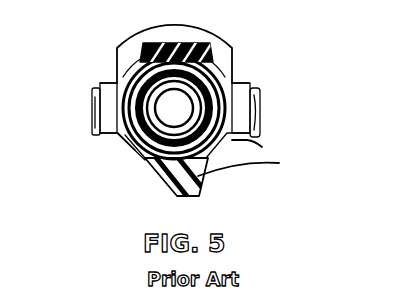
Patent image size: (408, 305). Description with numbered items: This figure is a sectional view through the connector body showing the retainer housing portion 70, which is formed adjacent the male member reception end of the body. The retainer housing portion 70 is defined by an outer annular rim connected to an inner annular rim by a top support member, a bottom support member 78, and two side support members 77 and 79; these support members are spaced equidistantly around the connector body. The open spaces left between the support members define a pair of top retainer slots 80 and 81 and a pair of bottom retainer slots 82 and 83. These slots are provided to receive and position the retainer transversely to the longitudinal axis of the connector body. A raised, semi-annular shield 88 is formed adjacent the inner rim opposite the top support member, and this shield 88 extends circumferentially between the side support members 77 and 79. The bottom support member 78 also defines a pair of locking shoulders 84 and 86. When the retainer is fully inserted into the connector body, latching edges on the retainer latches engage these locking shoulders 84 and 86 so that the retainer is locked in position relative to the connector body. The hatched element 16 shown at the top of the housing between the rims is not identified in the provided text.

The key block 16 is at (188, 42).
The retainer housing portion 70 is at (145, 43).
The side support member 77 is at (88, 112).
The bottom support member 78 is at (203, 192).
The side support member 79 is at (262, 107).
The top retainer slot 80 is at (113, 82).
The top retainer slot 81 is at (241, 83).
The bottom retainer slot 82 is at (118, 148).
The bottom retainer slot 83 is at (242, 141).
The locking shoulder 84 is at (144, 174).
The locking shoulder 86 is at (252, 168).
The shield 88 is at (224, 42).